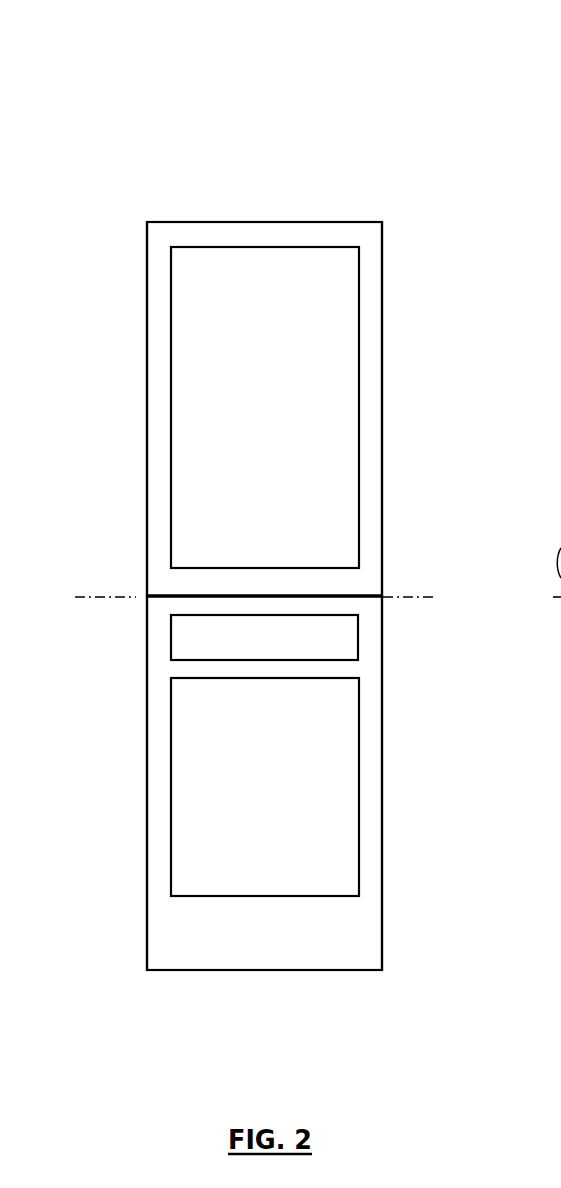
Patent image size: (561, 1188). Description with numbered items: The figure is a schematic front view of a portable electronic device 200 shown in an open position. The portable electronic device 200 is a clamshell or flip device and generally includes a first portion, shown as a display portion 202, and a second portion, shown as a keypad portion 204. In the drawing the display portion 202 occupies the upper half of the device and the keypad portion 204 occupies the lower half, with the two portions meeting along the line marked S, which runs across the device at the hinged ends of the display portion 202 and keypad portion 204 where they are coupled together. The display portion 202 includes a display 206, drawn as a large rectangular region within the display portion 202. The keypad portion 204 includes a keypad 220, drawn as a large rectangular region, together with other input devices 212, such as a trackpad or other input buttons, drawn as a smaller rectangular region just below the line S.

The portable electronic device 200 is at (130, 70).
The display portion 202 is at (373, 270).
The keypad portion 204 is at (377, 807).
The display 206 is at (198, 347).
The other input devices 212 is at (182, 632).
The keypad 220 is at (190, 803).
The seam / section line S is at (88, 597).